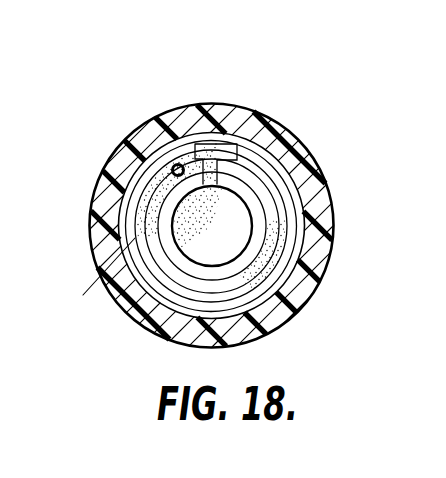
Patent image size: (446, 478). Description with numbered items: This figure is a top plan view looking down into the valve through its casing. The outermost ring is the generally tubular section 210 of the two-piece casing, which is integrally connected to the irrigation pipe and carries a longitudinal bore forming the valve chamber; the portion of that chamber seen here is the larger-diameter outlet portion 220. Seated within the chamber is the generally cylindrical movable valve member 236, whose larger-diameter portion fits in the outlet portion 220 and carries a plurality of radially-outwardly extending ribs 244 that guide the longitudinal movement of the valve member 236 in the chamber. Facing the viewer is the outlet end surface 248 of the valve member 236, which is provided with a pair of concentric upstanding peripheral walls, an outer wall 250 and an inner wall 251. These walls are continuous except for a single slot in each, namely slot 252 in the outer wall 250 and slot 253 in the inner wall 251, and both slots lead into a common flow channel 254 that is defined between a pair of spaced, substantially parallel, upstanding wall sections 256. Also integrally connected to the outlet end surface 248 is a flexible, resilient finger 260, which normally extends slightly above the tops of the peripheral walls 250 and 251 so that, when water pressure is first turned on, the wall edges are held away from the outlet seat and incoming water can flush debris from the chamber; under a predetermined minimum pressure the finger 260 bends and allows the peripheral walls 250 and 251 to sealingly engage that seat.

The tubular section 210 is at (108, 162).
The outlet portion 220 is at (130, 184).
The valve member 236 is at (283, 183).
The ribs 244 is at (302, 227).
The outlet end surface 248 is at (283, 293).
The outer peripheral wall 250 is at (280, 265).
The inner peripheral wall 251 is at (260, 217).
The slot in outer wall 252 is at (214, 142).
The slot in inner wall 253 is at (209, 190).
The flow channel 254 is at (236, 149).
The upstanding wall sections 256 is at (196, 145).
The resilient finger 260 is at (176, 158).